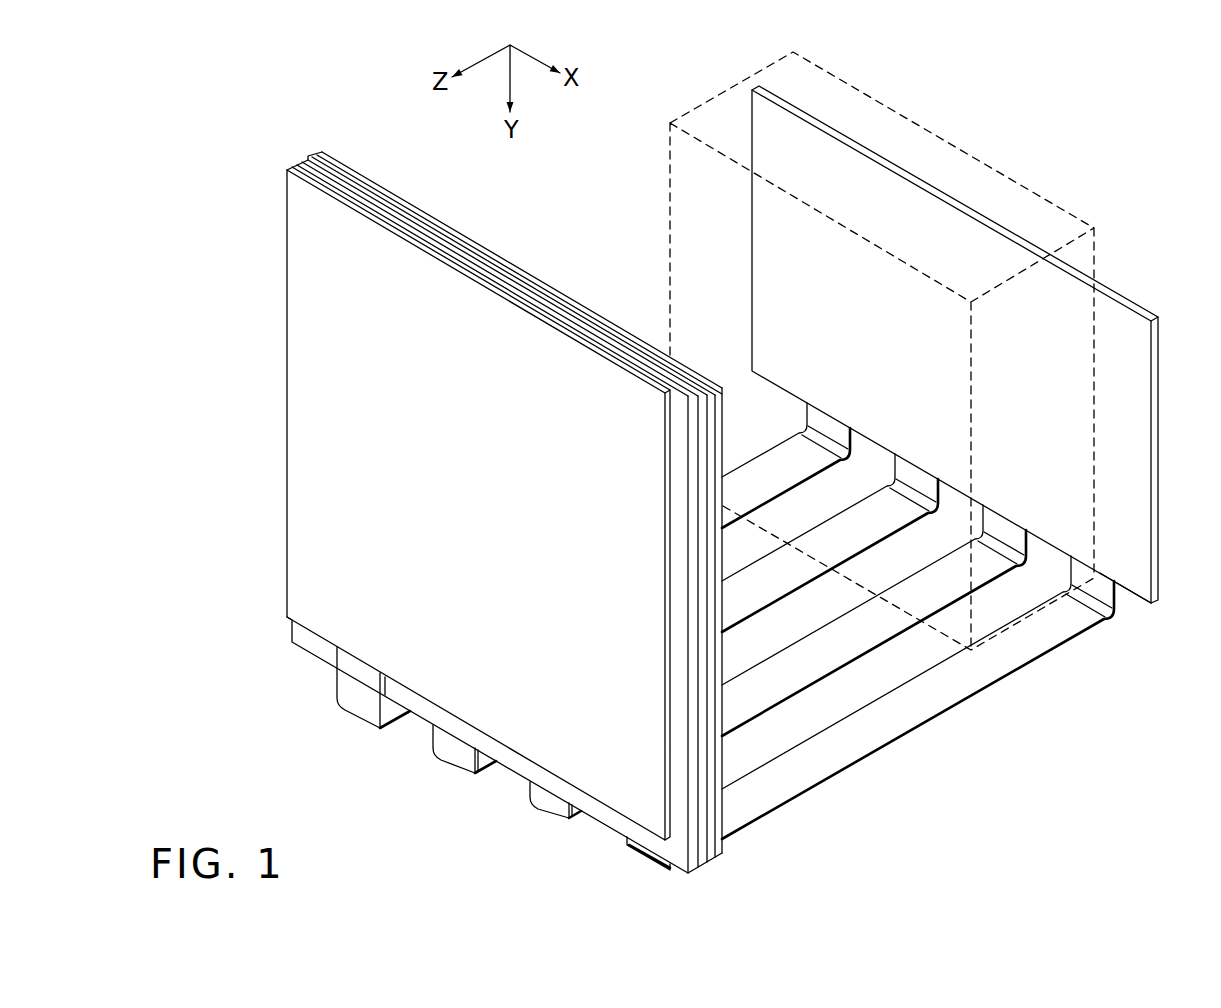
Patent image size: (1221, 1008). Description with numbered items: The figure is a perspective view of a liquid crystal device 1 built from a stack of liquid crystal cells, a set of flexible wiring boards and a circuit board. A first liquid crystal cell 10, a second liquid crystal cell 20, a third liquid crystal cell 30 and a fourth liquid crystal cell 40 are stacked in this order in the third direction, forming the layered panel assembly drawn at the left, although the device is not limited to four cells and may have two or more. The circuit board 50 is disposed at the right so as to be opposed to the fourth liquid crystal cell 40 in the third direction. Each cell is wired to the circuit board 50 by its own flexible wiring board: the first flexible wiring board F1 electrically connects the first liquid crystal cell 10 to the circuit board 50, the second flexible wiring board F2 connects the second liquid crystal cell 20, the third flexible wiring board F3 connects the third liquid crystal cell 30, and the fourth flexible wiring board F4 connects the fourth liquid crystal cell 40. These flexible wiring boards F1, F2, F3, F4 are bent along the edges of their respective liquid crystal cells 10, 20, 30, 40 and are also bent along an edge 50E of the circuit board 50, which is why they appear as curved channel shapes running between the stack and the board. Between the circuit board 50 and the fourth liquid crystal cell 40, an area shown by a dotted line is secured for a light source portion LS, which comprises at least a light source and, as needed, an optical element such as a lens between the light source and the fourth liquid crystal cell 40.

The liquid crystal device 1 is at (447, 785).
The first liquid crystal cell 10 is at (287, 169).
The second liquid crystal cell 20 is at (297, 163).
The third liquid crystal cell 30 is at (316, 156).
The fourth liquid crystal cell 40 is at (323, 152).
The circuit board 50 is at (1151, 318).
The edge of the circuit board 50E is at (1130, 600).
The light source portion LS is at (1085, 222).
The first flexible wiring board F1 is at (790, 441).
The second flexible wiring board F2 is at (845, 513).
The third flexible wiring board F3 is at (925, 568).
The fourth flexible wiring board F4 is at (1040, 604).